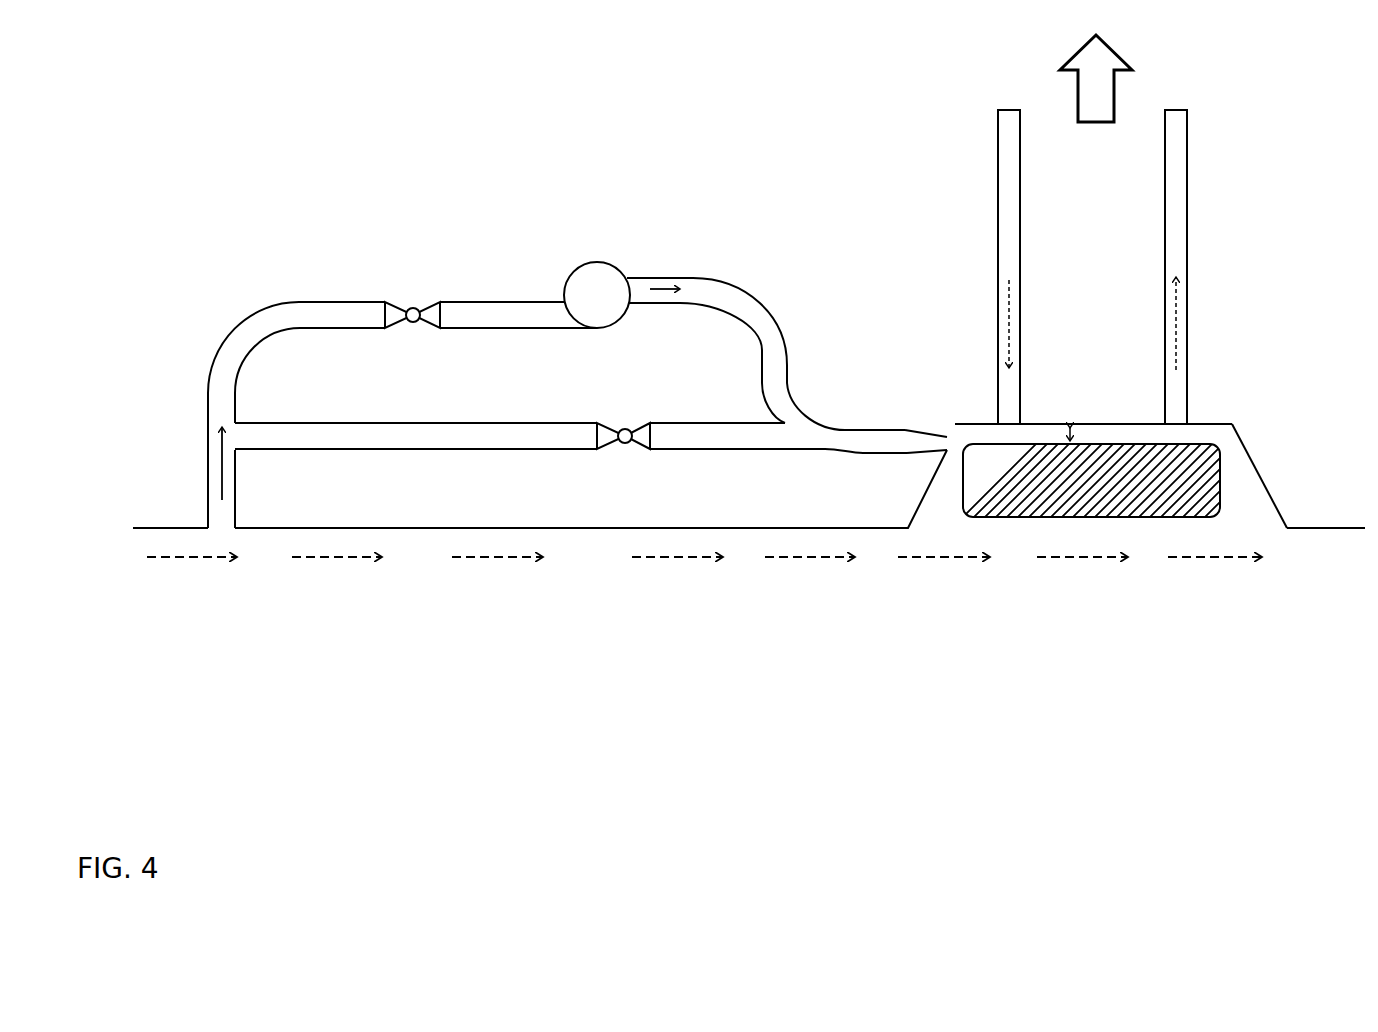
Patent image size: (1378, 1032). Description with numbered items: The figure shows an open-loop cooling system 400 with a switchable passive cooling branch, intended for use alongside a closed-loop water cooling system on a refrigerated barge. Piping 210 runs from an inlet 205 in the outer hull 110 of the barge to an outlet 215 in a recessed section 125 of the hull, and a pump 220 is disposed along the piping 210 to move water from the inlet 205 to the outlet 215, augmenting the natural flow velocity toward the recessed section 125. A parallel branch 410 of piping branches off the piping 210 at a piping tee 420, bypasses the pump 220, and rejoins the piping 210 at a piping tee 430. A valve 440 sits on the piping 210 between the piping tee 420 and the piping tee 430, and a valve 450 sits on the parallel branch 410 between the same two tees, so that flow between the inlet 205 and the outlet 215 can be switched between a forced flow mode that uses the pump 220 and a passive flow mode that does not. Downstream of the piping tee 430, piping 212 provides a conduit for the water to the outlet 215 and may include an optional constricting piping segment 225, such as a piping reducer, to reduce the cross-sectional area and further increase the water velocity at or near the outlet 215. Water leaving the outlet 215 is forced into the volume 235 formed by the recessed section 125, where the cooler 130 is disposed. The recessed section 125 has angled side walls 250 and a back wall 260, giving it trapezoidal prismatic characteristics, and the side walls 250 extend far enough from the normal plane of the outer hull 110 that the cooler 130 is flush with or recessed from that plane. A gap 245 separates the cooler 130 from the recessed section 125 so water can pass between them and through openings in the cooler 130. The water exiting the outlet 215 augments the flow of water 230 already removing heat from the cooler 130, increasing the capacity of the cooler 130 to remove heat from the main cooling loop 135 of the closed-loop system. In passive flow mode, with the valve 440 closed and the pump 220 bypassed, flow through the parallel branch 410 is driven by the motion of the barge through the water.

The open-loop cooling system 400 is at (200, 140).
The outer hull 110 is at (165, 528).
The inlet 205 is at (227, 532).
The flow of water 230 is at (333, 557).
The piping 210 is at (230, 337).
The piping tee 420 is at (210, 437).
The valve 440 is at (413, 303).
The pump 220 is at (598, 260).
The parallel branch 410 is at (453, 423).
The valve 450 is at (627, 430).
The piping 212 is at (838, 428).
The constricting piping segment 225 is at (935, 435).
The piping tee 430 is at (823, 449).
The outlet 215 is at (958, 445).
The back wall 260 is at (1043, 425).
The gap 245 is at (1077, 435).
The recessed section 125 is at (1199, 423).
The main cooling loop 135 is at (1190, 218).
The cooler 130 is at (965, 510).
The side walls 250 is at (1240, 438).
The volume 235 is at (1240, 457).